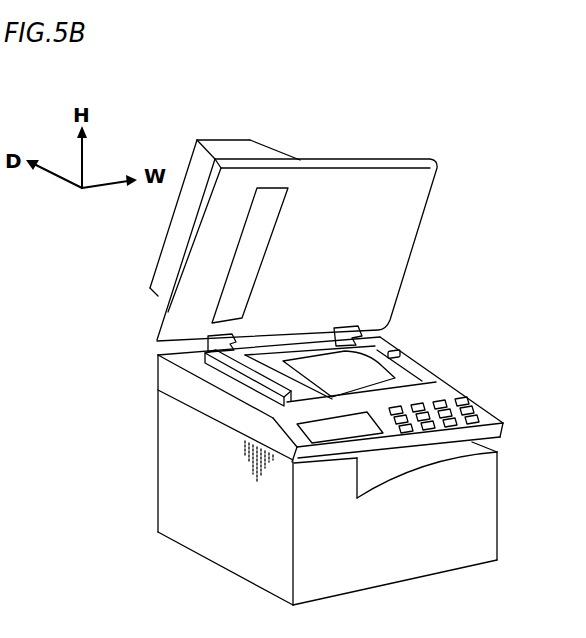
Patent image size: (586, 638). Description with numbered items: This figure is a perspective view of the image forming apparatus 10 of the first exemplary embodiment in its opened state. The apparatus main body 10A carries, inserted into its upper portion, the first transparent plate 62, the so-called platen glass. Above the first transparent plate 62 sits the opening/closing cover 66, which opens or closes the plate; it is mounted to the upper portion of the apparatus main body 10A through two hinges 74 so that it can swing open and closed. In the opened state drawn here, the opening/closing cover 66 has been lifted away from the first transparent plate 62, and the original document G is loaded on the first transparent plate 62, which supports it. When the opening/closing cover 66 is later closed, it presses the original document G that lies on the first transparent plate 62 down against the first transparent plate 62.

The image forming apparatus 10 is at (517, 194).
The apparatus main body 10A is at (158, 482).
The first transparent plate 62 is at (440, 365).
The original document G is at (413, 352).
The hinges 74 is at (204, 346).
The opening/closing cover 66 is at (433, 144).